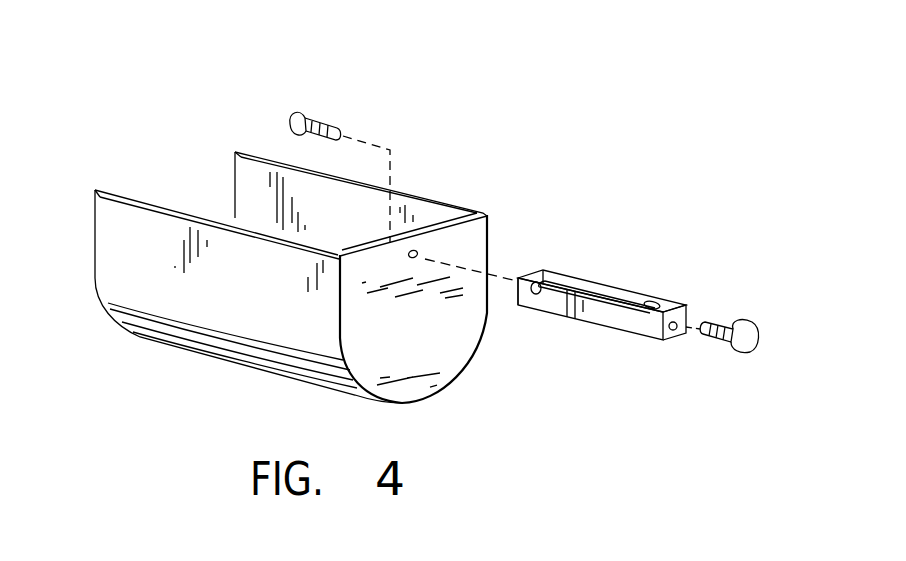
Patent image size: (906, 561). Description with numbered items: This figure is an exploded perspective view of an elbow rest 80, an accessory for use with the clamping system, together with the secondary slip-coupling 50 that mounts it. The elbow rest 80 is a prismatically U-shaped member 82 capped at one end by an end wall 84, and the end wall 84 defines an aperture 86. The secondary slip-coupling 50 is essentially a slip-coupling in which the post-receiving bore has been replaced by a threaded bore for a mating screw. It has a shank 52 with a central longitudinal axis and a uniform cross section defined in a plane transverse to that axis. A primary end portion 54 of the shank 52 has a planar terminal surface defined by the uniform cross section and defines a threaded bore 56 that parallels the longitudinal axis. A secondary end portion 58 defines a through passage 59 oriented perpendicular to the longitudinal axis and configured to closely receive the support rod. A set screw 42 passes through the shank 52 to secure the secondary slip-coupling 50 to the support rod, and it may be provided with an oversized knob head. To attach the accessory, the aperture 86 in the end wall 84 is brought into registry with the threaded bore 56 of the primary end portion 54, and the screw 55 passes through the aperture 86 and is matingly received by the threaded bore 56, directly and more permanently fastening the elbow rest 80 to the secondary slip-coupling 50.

The elbow rest 80 is at (436, 117).
The prismatically U-shaped member 82 is at (247, 311).
The end wall 84 is at (420, 350).
The aperture 86 is at (417, 252).
The screw 55 is at (321, 119).
The secondary slip-coupling 50 is at (625, 268).
The shank 52 is at (600, 317).
The primary end portion 54 is at (517, 296).
The threaded bore 56 is at (541, 279).
The secondary end portion 58 is at (674, 342).
The through passage 59 is at (657, 301).
The set screw 42 is at (717, 344).